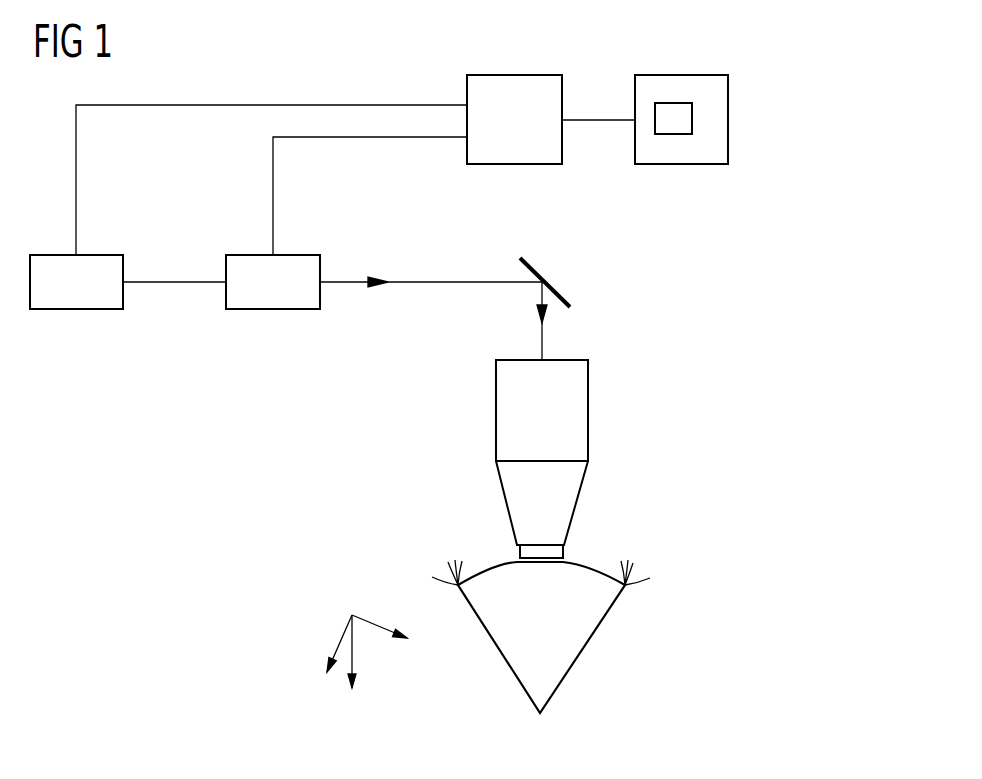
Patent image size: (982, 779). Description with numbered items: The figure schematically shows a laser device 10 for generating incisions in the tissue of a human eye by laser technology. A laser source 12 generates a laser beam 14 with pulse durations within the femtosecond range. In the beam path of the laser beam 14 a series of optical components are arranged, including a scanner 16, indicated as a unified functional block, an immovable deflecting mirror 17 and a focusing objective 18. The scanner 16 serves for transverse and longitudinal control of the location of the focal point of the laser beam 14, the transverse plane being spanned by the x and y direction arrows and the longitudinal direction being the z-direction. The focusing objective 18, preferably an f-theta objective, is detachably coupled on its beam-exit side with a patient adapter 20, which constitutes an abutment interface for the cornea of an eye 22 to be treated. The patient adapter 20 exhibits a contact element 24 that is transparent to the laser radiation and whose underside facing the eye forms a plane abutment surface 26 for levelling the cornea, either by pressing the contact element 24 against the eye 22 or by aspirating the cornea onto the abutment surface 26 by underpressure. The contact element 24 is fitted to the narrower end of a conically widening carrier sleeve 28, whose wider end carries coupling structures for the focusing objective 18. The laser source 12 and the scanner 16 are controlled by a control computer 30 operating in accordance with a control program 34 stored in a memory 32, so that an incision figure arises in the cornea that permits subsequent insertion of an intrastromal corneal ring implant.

The laser device 10 is at (282, 565).
The laser source 12 is at (78, 310).
The laser beam 14 is at (165, 283).
The scanner 16 is at (273, 310).
The deflecting mirror 17 is at (555, 285).
The focusing objective 18 is at (590, 410).
The patient adapter 20 is at (580, 502).
The eye 22 is at (590, 643).
The contact element 24 is at (552, 550).
The abutment surface 26 is at (535, 562).
The carrier sleeve 28 is at (518, 495).
The control computer 30 is at (512, 75).
The memory 32 is at (680, 75).
The control program 34 is at (675, 135).